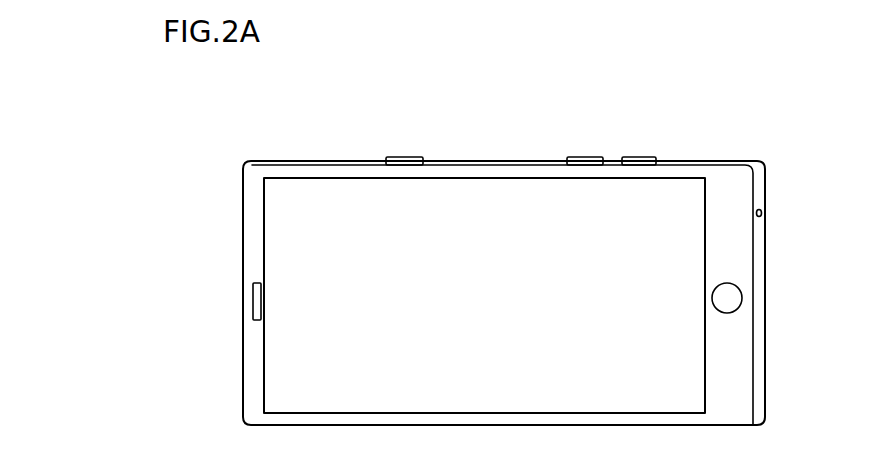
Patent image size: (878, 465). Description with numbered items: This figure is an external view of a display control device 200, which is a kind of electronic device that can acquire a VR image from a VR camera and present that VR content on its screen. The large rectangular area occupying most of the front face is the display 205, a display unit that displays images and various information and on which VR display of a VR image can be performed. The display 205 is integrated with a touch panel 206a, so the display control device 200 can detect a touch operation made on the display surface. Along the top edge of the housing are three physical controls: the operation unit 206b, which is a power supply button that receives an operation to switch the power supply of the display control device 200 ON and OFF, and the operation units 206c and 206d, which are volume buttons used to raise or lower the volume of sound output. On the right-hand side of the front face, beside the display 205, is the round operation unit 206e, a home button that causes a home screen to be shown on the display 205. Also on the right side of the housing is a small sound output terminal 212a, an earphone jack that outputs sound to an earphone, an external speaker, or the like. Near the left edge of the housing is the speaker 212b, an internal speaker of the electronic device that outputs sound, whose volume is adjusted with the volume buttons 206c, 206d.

The display control device 200 is at (730, 378).
The display 205 is at (475, 245).
The touch panel 206a is at (333, 193).
The power supply button 206b is at (398, 157).
The volume button 206c is at (576, 157).
The volume button 206d is at (652, 157).
The home button 206e is at (727, 294).
The sound output terminal 212a is at (761, 212).
The speaker 212b is at (255, 300).